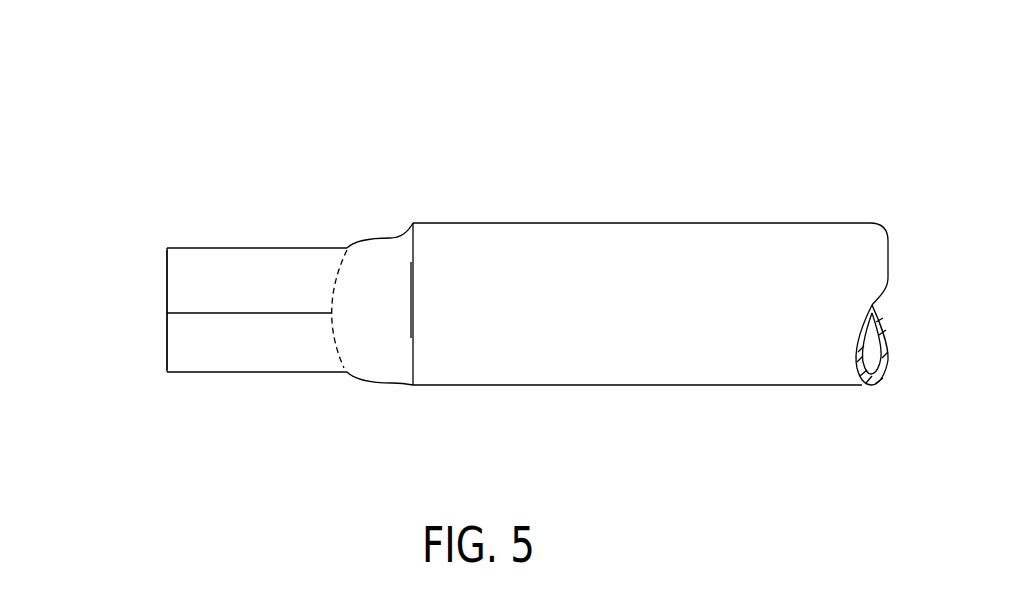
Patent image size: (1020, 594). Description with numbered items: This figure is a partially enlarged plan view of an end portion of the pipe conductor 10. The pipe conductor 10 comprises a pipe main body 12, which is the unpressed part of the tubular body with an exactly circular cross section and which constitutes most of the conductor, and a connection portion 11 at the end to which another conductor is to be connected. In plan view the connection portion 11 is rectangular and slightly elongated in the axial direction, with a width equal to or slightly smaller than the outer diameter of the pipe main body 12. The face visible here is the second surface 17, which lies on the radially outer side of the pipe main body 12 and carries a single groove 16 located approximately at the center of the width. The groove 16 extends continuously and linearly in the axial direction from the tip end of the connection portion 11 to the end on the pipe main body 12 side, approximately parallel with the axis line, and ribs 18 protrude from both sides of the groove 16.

The pipe conductor 10 is at (578, 140).
The connection portion 11 is at (218, 262).
The pipe main body 12 is at (665, 233).
The groove 16 is at (268, 313).
The second surface 17 is at (240, 357).
The rib 18 is at (178, 280).